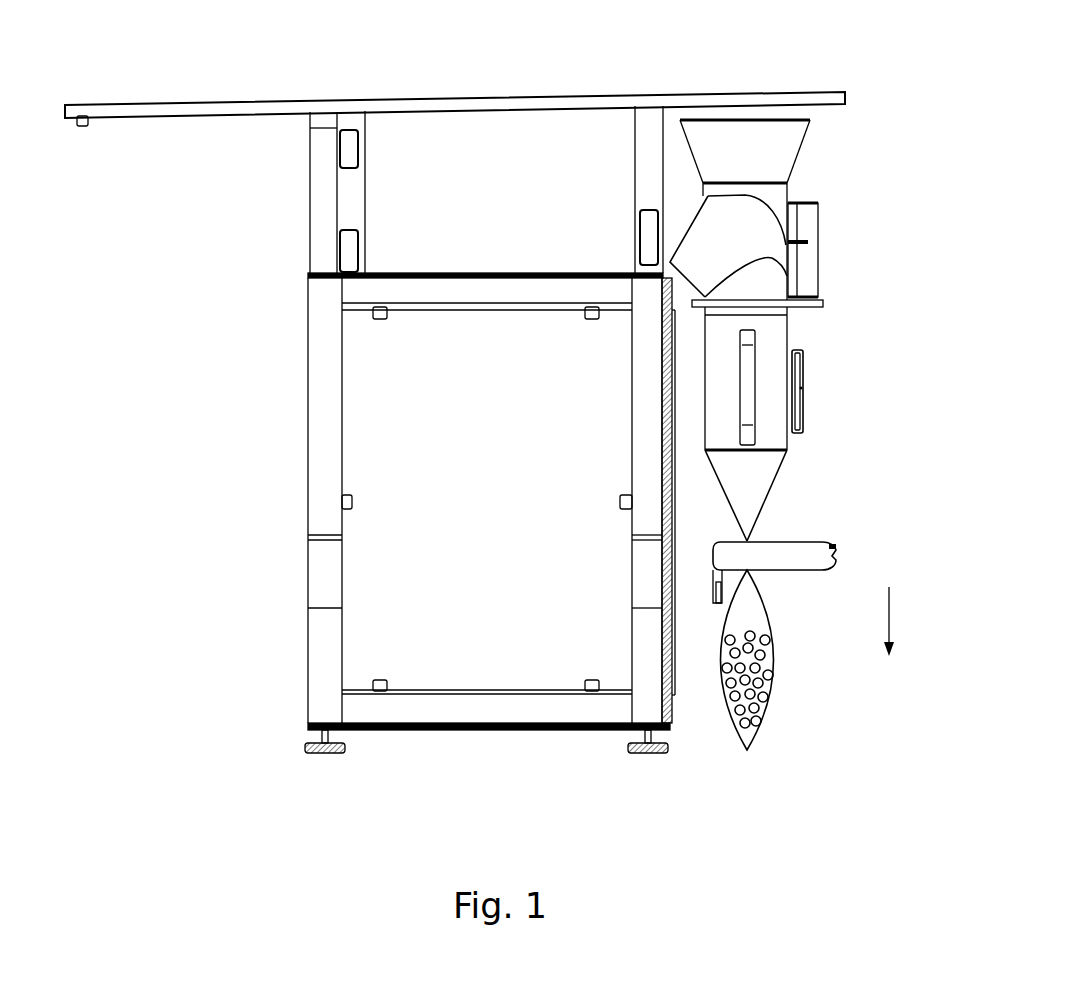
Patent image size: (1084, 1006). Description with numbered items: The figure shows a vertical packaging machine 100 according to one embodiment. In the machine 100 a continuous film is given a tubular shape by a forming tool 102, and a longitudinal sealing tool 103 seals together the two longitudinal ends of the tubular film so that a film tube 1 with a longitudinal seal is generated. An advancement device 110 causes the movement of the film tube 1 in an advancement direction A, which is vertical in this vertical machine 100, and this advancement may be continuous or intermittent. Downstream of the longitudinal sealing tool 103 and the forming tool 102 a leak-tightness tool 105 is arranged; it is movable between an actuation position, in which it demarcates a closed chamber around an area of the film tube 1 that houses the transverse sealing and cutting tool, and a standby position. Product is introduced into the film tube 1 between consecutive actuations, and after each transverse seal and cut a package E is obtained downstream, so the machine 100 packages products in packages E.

The packaging machine 100 is at (246, 77).
The forming tool 102 is at (748, 247).
The longitudinal sealing tool 103 is at (800, 371).
The advancement device 110 is at (750, 410).
The film tube 1 is at (767, 517).
The leak-tightness tool 105 is at (837, 547).
The package E is at (750, 616).
The advancement direction A is at (901, 621).